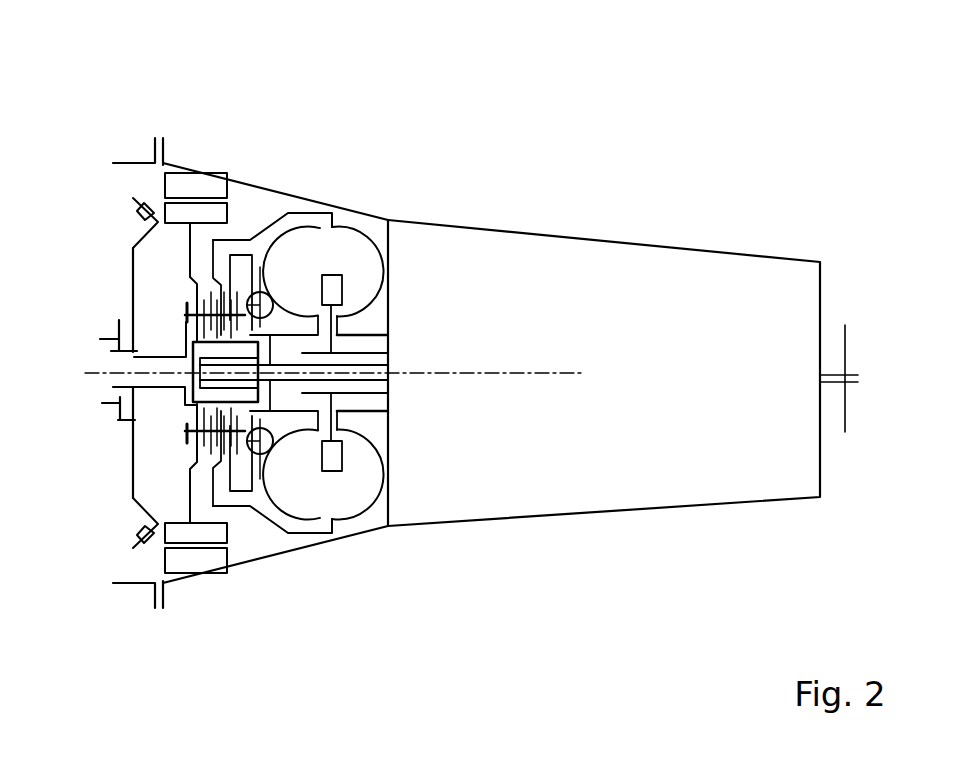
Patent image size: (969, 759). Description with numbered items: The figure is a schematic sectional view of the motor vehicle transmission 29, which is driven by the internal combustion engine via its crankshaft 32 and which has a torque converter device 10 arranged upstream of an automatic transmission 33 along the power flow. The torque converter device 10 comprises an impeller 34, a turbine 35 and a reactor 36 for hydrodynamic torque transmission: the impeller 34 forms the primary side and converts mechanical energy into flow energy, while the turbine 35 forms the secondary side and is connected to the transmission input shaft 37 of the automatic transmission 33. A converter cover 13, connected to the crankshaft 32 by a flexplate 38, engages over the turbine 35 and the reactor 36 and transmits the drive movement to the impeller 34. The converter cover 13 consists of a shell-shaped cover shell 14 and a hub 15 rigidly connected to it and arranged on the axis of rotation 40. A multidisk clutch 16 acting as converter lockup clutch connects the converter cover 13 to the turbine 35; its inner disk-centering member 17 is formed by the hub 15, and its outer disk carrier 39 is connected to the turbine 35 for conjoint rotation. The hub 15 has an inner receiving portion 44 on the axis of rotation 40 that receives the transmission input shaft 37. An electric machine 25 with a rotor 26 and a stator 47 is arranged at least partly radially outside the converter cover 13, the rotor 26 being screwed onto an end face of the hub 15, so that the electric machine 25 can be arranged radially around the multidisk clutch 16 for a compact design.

The torque converter device 10 is at (332, 160).
The converter cover 13 is at (245, 215).
The cover shell 14 is at (283, 212).
The hub 15 is at (215, 378).
The multidisk clutch 16 is at (236, 502).
The inner disk-centering member 17 is at (195, 326).
The electric machine 25 is at (206, 588).
The rotor 26 is at (188, 214).
The motor vehicle transmission 29 is at (745, 140).
The crankshaft 32 is at (117, 345).
The automatic transmission 33 is at (683, 318).
The impeller 34 is at (364, 222).
The turbine 35 is at (287, 504).
The reactor 36 is at (331, 458).
The transmission input shaft 37 is at (372, 380).
The flexplate 38 is at (131, 443).
The outer disk carrier 39 is at (205, 243).
The axis of rotation 40 is at (533, 373).
The inner receiving portion 44 is at (205, 404).
The stator 47 is at (192, 186).